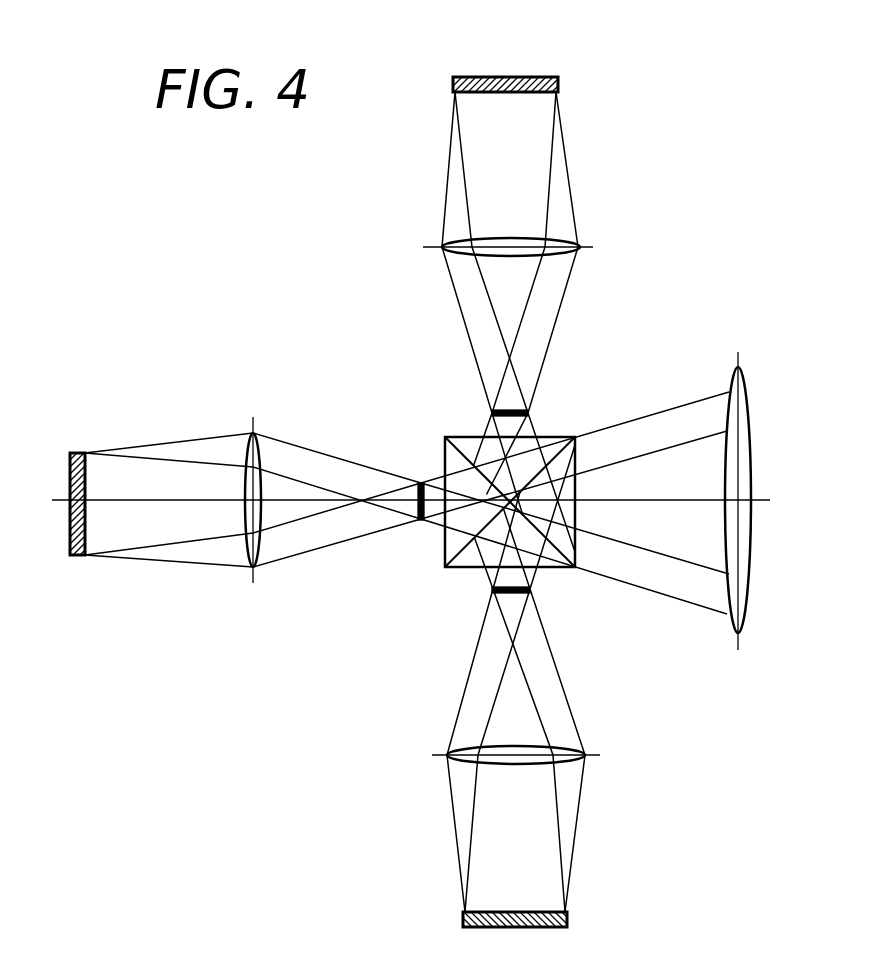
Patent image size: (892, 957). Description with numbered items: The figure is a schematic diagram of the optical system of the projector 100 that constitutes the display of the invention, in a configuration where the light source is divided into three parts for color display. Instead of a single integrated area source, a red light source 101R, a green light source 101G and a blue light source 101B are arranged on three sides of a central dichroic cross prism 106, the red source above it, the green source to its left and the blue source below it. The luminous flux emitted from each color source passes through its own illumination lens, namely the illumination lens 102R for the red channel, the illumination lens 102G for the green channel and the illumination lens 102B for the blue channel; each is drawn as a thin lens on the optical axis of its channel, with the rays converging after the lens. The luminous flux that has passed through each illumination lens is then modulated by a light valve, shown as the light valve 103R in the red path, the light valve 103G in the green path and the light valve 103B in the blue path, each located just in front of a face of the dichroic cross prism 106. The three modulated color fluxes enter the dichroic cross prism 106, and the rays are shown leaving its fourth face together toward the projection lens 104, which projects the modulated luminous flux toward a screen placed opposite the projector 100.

The projector 100 is at (638, 232).
The red light source 101R is at (553, 77).
The green light source 101G is at (76, 453).
The blue light source 101B is at (463, 918).
The illumination lens 102R is at (458, 242).
The illumination lens 102G is at (260, 434).
The illumination lens 102B is at (462, 748).
The light valve 103R is at (492, 410).
The light valve 103G is at (421, 484).
The light valve 103B is at (493, 590).
The projection lens 104 is at (740, 370).
The dichroic cross prism 106 is at (560, 567).